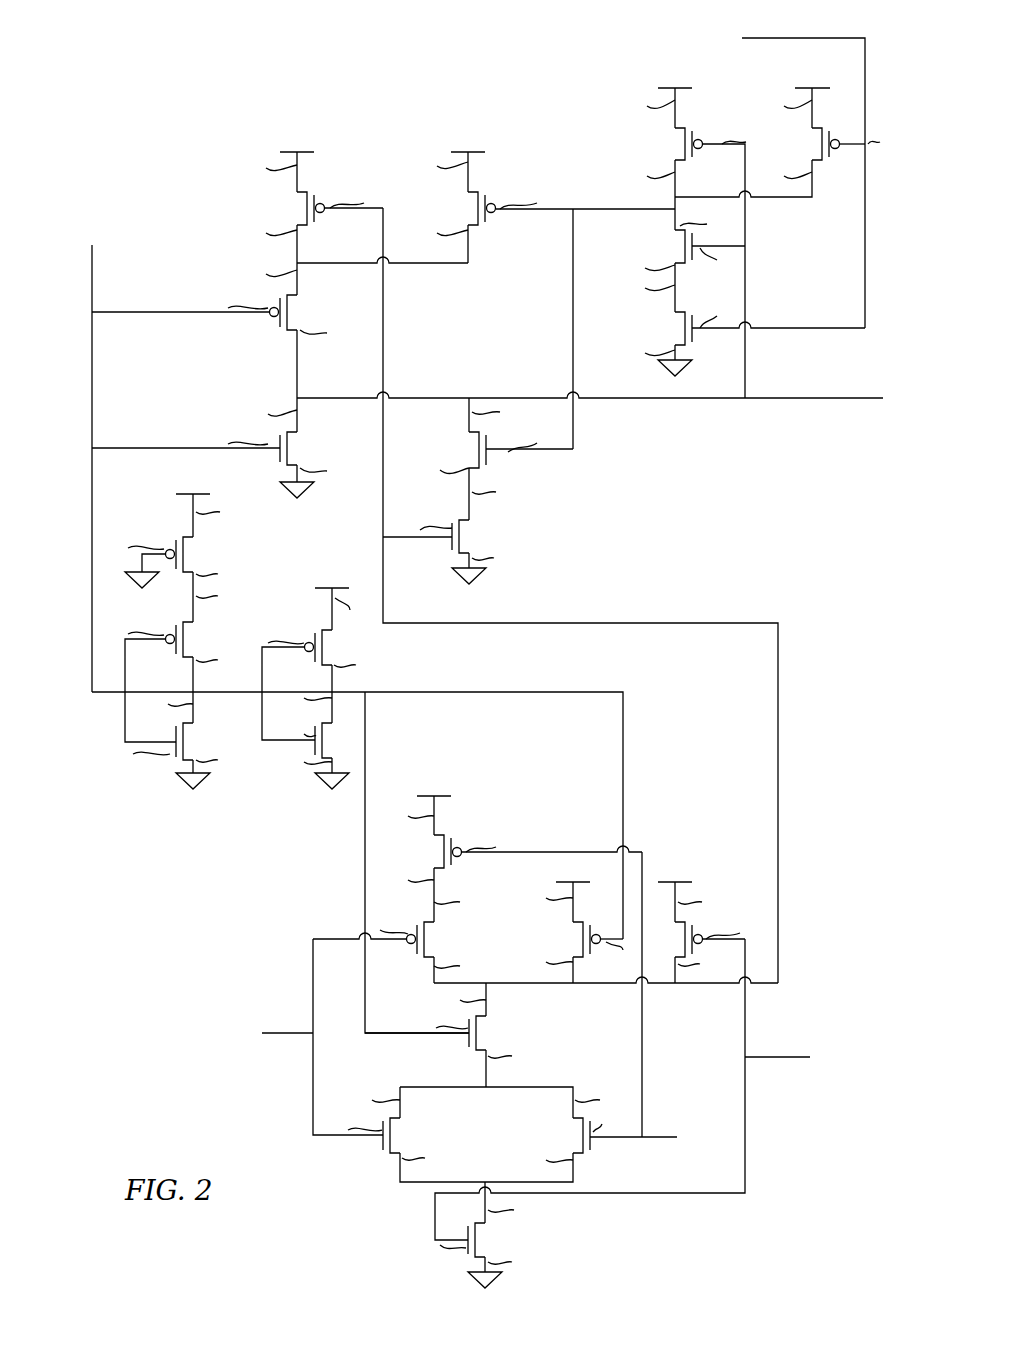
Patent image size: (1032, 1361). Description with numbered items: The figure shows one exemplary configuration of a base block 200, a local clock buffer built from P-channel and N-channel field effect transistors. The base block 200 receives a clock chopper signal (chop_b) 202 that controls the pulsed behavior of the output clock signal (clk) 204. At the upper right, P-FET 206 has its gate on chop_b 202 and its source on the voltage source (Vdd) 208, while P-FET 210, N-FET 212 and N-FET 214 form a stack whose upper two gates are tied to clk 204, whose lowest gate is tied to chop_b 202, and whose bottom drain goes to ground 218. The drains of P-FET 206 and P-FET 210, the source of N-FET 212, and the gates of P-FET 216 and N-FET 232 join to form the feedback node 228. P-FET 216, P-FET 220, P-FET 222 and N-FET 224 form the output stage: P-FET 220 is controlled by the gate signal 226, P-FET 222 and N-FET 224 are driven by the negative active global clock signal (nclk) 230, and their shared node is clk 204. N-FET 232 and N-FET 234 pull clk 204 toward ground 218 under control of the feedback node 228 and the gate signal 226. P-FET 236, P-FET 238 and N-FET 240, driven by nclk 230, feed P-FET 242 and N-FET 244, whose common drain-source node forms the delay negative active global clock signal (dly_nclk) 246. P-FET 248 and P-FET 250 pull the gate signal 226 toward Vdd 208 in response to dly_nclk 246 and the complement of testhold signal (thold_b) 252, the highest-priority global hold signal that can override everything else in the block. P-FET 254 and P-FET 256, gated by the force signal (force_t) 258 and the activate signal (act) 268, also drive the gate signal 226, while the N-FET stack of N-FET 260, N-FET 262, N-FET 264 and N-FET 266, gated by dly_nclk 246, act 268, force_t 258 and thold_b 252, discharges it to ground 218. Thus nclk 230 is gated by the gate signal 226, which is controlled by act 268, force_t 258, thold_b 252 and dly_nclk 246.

The base block 200 is at (172, 100).
The clock chopper signal (chop_b) 202 is at (830, 38).
The output clock signal (clk) 204 is at (833, 398).
The P-FET 206 is at (833, 124).
The voltage source (Vdd) 208 is at (670, 88).
The P-FET 210 is at (665, 140).
The N-FET 212 is at (665, 242).
The N-FET 214 is at (665, 327).
The P-FET 216 is at (486, 184).
The ground 218 is at (656, 372).
The P-FET 220 is at (288, 204).
The P-FET 222 is at (308, 306).
The N-FET 224 is at (308, 444).
The gate signal 226 is at (645, 623).
The feedback node (fb_2) 228 is at (620, 209).
The negative active global clock signal (nclk) 230 is at (92, 288).
The N-FET 232 is at (456, 442).
The N-FET 234 is at (484, 528).
The P-FET 236 is at (208, 548).
The P-FET 238 is at (208, 633).
The N-FET 240 is at (208, 738).
The P-FET 242 is at (347, 645).
The N-FET 244 is at (348, 737).
The delay negative active global clock signal (dly_nclk) 246 is at (565, 692).
The P-FET 248 is at (562, 936).
The P-FET 250 is at (712, 925).
The complement of testhold signal (thold_b) 252 is at (802, 1057).
The P-FET 254 is at (430, 852).
The P-FET 256 is at (447, 940).
The force signal (force_t) 258 is at (642, 1050).
The N-FET 260 is at (497, 1030).
The N-FET 262 is at (412, 1133).
The N-FET 264 is at (563, 1133).
The N-FET 266 is at (499, 1235).
The activate signal (act) 268 is at (302, 1033).